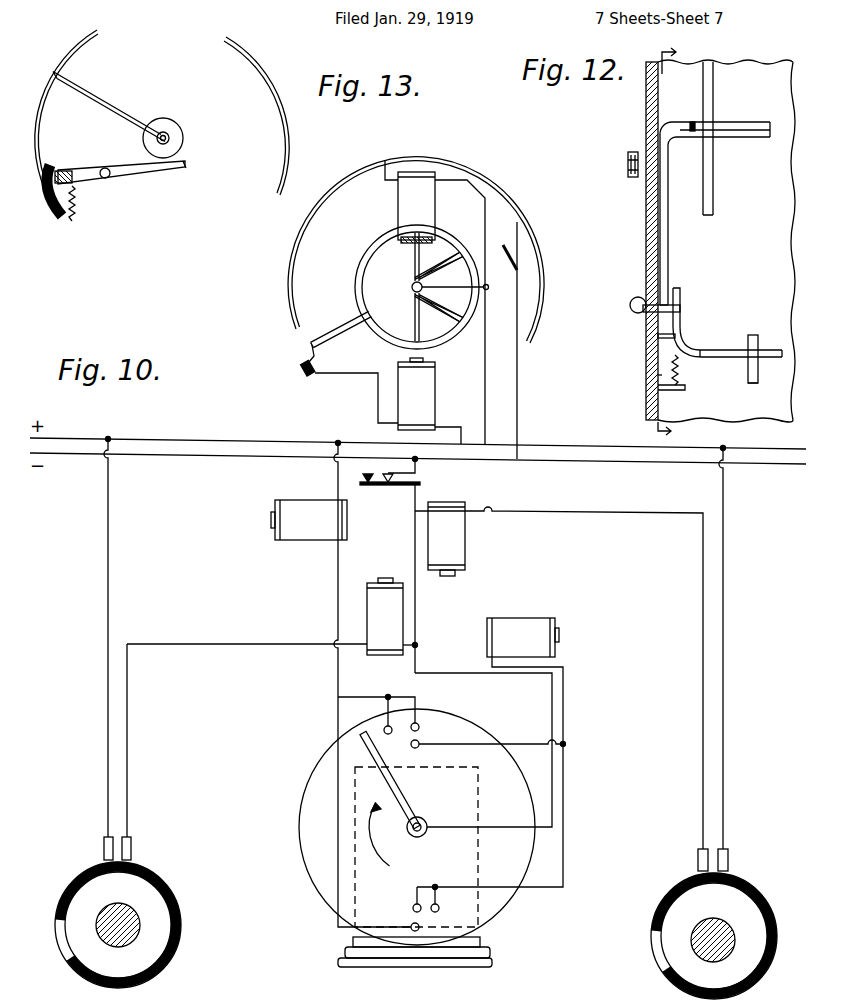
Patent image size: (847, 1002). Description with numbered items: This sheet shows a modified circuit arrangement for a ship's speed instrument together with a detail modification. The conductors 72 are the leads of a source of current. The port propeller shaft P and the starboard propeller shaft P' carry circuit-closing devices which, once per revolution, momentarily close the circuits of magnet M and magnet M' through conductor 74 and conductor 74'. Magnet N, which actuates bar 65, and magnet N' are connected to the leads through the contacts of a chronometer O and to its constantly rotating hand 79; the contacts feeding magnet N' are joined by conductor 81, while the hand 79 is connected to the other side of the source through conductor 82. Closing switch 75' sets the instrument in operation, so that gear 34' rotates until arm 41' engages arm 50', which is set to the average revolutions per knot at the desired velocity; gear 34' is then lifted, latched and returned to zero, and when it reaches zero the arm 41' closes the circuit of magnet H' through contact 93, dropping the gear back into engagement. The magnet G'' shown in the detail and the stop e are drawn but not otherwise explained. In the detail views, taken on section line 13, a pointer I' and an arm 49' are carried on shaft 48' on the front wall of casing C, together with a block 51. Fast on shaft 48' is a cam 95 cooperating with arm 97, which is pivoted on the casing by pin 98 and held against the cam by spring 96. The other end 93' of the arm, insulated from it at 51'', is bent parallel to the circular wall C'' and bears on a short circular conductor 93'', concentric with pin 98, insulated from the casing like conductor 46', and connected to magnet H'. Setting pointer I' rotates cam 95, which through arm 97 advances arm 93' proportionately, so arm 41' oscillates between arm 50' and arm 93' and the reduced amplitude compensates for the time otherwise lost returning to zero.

In FIG. 13, the conductor 46' is at (162, 112).
In FIG. 12, the conductor 46' is at (736, 138).
In FIG. 13, the arm 49' is at (109, 103).
In FIG. 12, the arm 49' is at (685, 264).
In FIG. 13, the shaft 48' is at (179, 123).
In FIG. 12, the shaft 48' is at (612, 293).
In FIG. 13, the pin 98 is at (102, 168).
In FIG. 12, the pin 98 is at (658, 336).
In FIG. 13, the cam 95 is at (186, 163).
In FIG. 12, the cam 95 is at (680, 294).
In FIG. 13, the arm 97 is at (135, 182).
In FIG. 12, the arm 97 is at (690, 344).
In FIG. 13, the short circular conductor 93'' is at (46, 209).
In FIG. 12, the short circular conductor 93'' is at (768, 398).
In FIG. 13, the spring 96 is at (78, 210).
In FIG. 12, the spring 96 is at (672, 386).
In FIG. 13, the arm 50' is at (395, 250).
In FIG. 12, the arm 50' is at (717, 213).
In FIG. 13, the gear 34' is at (422, 272).
In FIG. 13, the arm 41' is at (340, 334).
In FIG. 13, the contact 93 is at (326, 389).
In FIG. 13, the magnet G'' is at (436, 310).
In FIG. 13, the magnet H' is at (431, 401).
In FIG. 13, the stop e is at (520, 252).
In FIG. 12, the section line 13 is at (680, 239).
In FIG. 12, the block 51 is at (686, 103).
In FIG. 12, the insulation 51'' is at (710, 366).
In FIG. 12, the pointer I' is at (605, 153).
In FIG. 12, the circular wall C'' is at (728, 241).
In FIG. 12, the casing C is at (627, 368).
In FIG. 12, the arm end 93' is at (771, 345).
In FIG. 10, the conductors 72 is at (180, 439).
In FIG. 10, the switch 75' is at (389, 565).
In FIG. 10, the magnet N is at (341, 684).
In FIG. 10, the magnet N' is at (523, 624).
In FIG. 10, the magnet M is at (354, 616).
In FIG. 10, the magnet M' is at (446, 558).
In FIG. 10, the conductor 74 is at (211, 649).
In FIG. 10, the conductor 74' is at (591, 659).
In FIG. 10, the conductor 82 is at (551, 711).
In FIG. 10, the conductor 81 is at (565, 697).
In FIG. 10, the chronometer O is at (303, 802).
In FIG. 10, the hand 79 is at (407, 799).
In FIG. 10, the port propeller shaft P is at (118, 925).
In FIG. 10, the starboard propeller shaft P' is at (714, 936).
In FIG. 10, the bar 65 is at (312, 981).